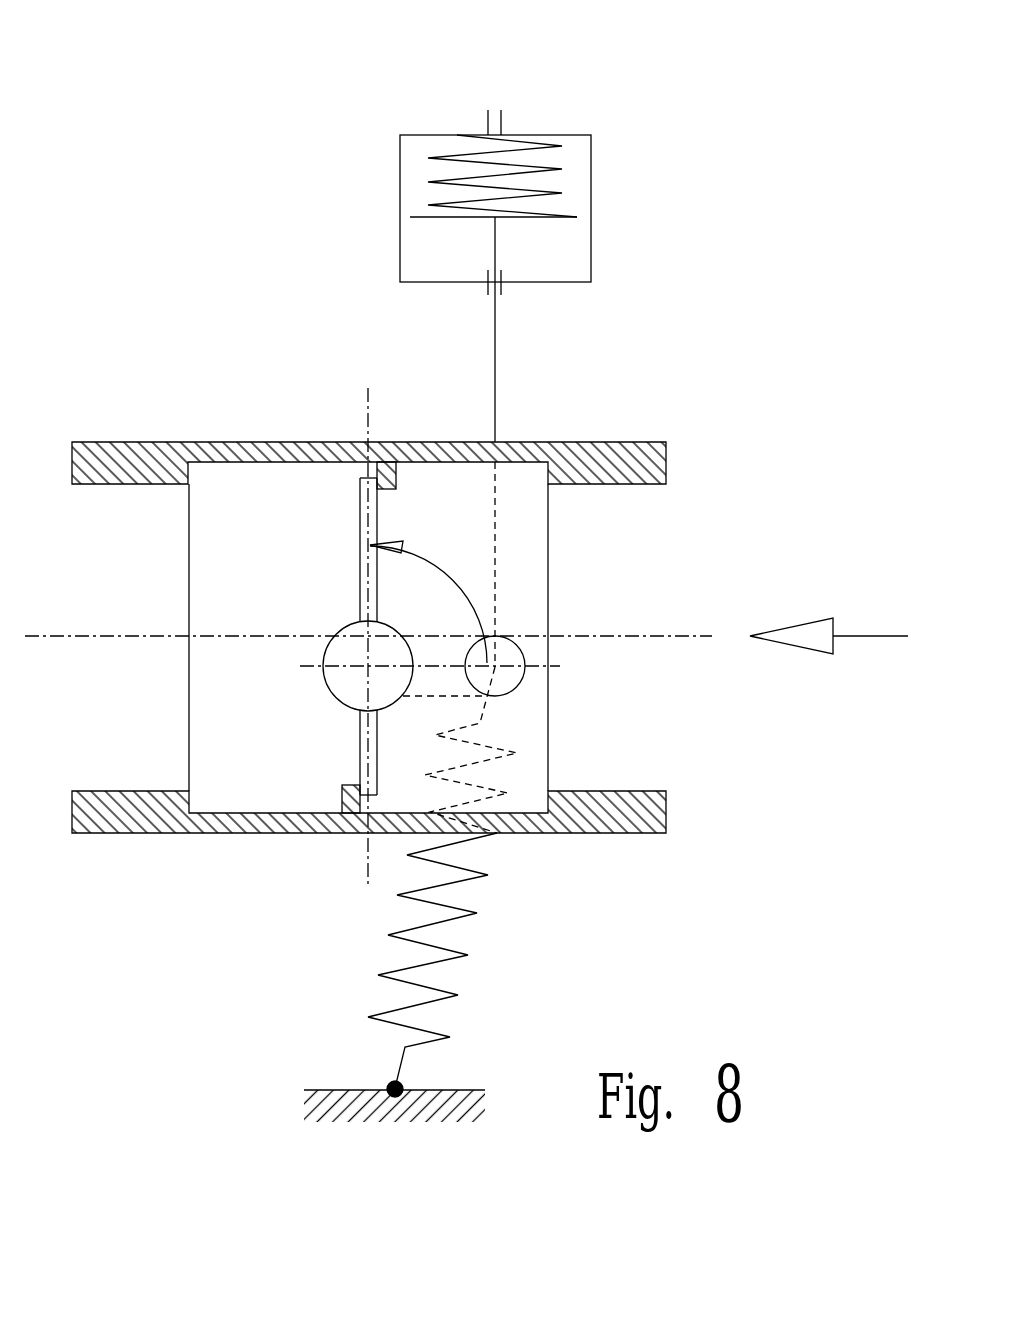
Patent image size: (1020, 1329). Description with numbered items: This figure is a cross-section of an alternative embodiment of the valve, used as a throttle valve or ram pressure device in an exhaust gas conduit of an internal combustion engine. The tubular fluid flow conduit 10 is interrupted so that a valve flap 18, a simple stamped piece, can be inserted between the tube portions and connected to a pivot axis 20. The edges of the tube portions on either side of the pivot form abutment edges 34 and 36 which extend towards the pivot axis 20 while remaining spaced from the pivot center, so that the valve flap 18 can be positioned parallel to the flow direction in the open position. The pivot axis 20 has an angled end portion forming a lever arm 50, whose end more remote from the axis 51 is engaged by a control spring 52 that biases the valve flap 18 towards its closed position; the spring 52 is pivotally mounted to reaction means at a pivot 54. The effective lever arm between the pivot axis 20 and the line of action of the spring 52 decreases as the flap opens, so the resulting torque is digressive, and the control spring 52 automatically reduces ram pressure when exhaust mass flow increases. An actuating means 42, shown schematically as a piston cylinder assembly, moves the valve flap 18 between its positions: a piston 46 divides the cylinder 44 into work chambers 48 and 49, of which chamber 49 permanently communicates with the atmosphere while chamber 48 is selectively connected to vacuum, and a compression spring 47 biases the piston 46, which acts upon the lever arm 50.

The tubular fluid flow conduit 10 is at (600, 443).
The valve flap 18 is at (360, 602).
The pivot axis 20 is at (332, 664).
The abutment edge 34 is at (380, 483).
The abutment edge 36 is at (360, 788).
The actuating means 42 is at (495, 231).
The cylinder 44 is at (592, 255).
The piston 46 is at (428, 217).
The compression spring 47 is at (465, 152).
The work chamber 48 is at (542, 119).
The work chamber 49 is at (542, 255).
The lever arm 50 is at (527, 663).
The axis 51 is at (655, 635).
The control spring 52 is at (483, 877).
The pivot 54 is at (397, 1097).